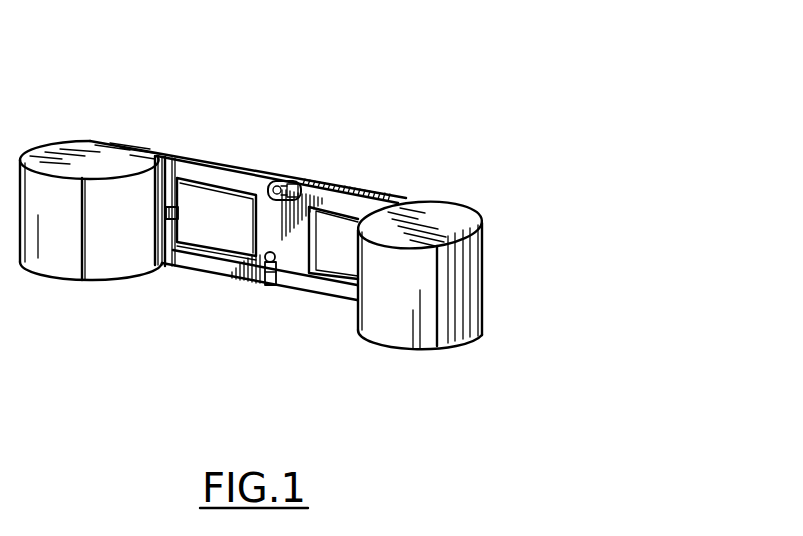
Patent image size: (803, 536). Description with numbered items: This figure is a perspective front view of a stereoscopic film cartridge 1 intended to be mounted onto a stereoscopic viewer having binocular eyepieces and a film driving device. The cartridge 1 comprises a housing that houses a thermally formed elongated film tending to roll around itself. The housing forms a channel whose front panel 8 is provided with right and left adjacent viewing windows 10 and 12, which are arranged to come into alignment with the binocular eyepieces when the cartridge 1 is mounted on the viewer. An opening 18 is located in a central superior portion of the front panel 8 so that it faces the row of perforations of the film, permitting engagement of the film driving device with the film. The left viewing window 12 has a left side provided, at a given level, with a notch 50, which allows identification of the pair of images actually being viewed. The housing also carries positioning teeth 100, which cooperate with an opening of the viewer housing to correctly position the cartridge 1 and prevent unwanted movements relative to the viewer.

The stereoscopic film cartridge 1 is at (103, 108).
The front panel 8 is at (270, 208).
The right viewing window 10 is at (358, 251).
The left viewing window 12 is at (237, 231).
The opening 18 is at (272, 182).
The notch 50 is at (162, 214).
The positioning teeth 100 is at (268, 262).